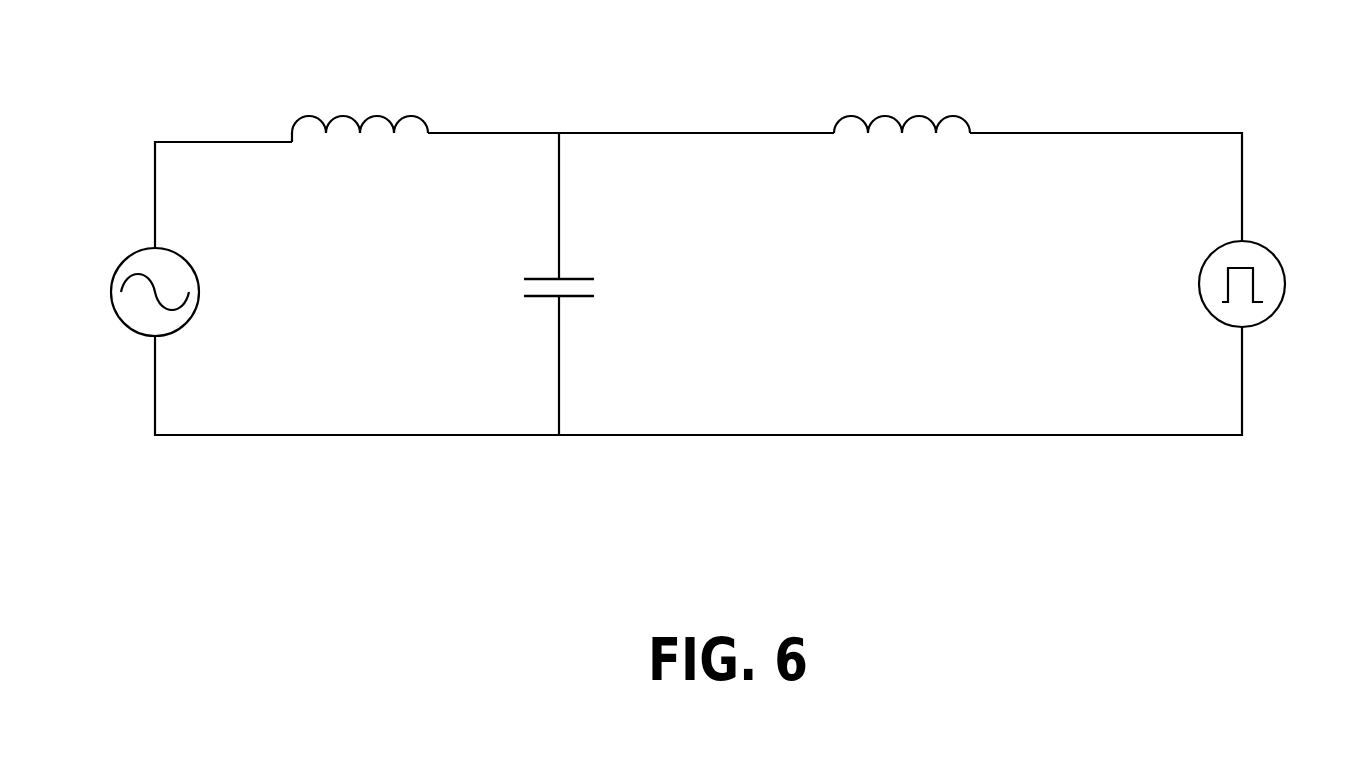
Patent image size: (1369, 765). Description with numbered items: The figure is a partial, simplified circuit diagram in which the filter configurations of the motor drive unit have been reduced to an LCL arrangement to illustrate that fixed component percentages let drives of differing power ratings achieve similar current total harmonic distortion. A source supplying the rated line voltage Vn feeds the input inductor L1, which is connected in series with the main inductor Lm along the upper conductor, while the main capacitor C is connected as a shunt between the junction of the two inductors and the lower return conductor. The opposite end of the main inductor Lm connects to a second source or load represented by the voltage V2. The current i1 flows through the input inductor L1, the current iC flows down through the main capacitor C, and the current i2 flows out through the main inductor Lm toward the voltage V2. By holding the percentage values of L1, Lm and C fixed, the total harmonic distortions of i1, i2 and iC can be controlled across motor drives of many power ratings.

The input inductor L1 is at (385, 103).
The main inductor Lm is at (931, 100).
The main capacitor C is at (641, 280).
The rated line voltage Vn is at (89, 238).
The output voltage / load source V2 is at (1299, 243).
The input current i1 is at (415, 166).
The capacitor current iC is at (493, 217).
The output current i2 is at (1198, 102).